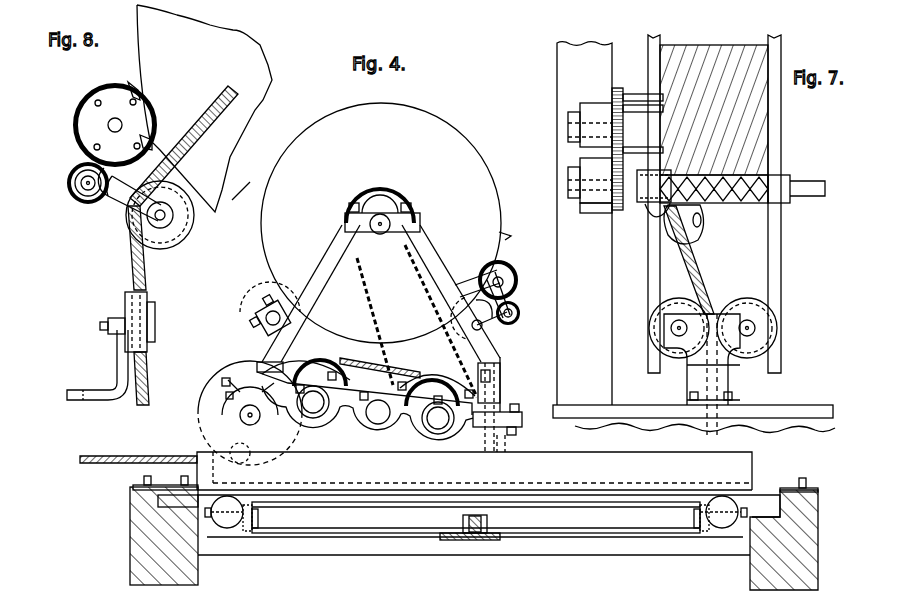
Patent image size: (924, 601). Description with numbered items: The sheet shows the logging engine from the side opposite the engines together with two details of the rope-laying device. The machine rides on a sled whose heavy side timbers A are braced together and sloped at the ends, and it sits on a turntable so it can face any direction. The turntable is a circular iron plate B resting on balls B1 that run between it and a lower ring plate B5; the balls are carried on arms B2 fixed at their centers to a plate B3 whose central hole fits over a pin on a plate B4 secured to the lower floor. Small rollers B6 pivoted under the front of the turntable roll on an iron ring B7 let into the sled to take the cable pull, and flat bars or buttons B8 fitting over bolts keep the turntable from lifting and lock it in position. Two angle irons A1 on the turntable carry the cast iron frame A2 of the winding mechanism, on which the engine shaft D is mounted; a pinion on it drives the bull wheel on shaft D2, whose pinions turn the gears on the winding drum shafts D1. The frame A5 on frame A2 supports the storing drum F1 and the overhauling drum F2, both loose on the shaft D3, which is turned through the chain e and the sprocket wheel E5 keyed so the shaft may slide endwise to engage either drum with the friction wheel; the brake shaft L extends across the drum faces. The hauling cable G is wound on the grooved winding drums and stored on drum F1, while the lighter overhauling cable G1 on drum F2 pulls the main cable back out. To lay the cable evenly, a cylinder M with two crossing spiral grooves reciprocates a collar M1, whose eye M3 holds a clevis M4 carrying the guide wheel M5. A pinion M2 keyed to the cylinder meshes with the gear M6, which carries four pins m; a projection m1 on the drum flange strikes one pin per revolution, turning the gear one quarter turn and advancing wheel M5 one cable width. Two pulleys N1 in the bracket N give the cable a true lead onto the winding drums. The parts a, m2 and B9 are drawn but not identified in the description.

In FIG. 4, the storing drum F1 is at (381, 223).
In FIG. 8, the overhauling drum F2 is at (204, 108).
In FIG. 7, the overhauling drum F2 is at (648, 266).
In FIG. 4, the sprocket wheel E5 is at (396, 202).
In FIG. 4, the shaft D3 is at (381, 226).
In FIG. 4, the frame A5 is at (437, 291).
In FIG. 4, the chain e is at (367, 292).
In FIG. 8, the cylinder M is at (72, 168).
In FIG. 7, the cylinder M is at (780, 200).
In FIG. 8, the collar M1 is at (75, 182).
In FIG. 7, the collar M1 is at (654, 186).
In FIG. 8, the pinion M2 is at (78, 192).
In FIG. 4, the pinion M2 is at (518, 314).
In FIG. 7, the pinion M2 is at (610, 213).
In FIG. 8, the eye M3 is at (110, 200).
In FIG. 8, the clevis M4 is at (128, 206).
In FIG. 7, the clevis M4 is at (648, 212).
In FIG. 8, the wheel M5 is at (192, 228).
In FIG. 4, the wheel M5 is at (471, 322).
In FIG. 7, the wheel M5 is at (700, 242).
In FIG. 8, the gear M6 is at (76, 112).
In FIG. 4, the gear M6 is at (515, 278).
In FIG. 7, the gear M6 is at (612, 90).
In FIG. 8, the pins m is at (130, 102).
In FIG. 7, the pins m is at (640, 114).
In FIG. 8, the projection m1 is at (138, 92).
In FIG. 4, the projection m1 is at (513, 240).
In FIG. 7, the projection m1 is at (643, 97).
In FIG. 8, the pawl m2 is at (152, 143).
In FIG. 8, the main or hauling cable G is at (134, 264).
In FIG. 4, the main or hauling cable G is at (507, 345).
In FIG. 7, the main or hauling cable G is at (684, 280).
In FIG. 4, the overhauling cable G1 is at (245, 189).
In FIG. 4, the brake shaft L is at (270, 309).
In FIG. 8, the supporting bracket N is at (148, 342).
In FIG. 4, the supporting bracket N is at (498, 370).
In FIG. 7, the supporting bracket N is at (690, 380).
In FIG. 7, the pulleys N1 is at (656, 330).
In FIG. 4, the cam disk a is at (250, 413).
In FIG. 4, the engine shaft D is at (250, 402).
In FIG. 4, the winding drum shafts D1 is at (375, 410).
In FIG. 4, the shaft D2 is at (384, 422).
In FIG. 4, the heavy timber A is at (130, 552).
In FIG. 4, the angle irons A1 is at (416, 503).
In FIG. 4, the cast iron frame A2 is at (389, 407).
In FIG. 7, the cast iron frame A2 is at (788, 412).
In FIG. 4, the circular iron plate B is at (582, 498).
In FIG. 4, the balls B1 is at (718, 528).
In FIG. 4, the arms B2 is at (476, 517).
In FIG. 4, the plate B3 is at (462, 521).
In FIG. 4, the plate B4 is at (476, 541).
In FIG. 4, the lower plate B5 is at (232, 542).
In FIG. 4, the rollers B6 is at (160, 501).
In FIG. 4, the iron ring B7 is at (160, 503).
In FIG. 4, the bars or buttons B8 is at (133, 488).
In FIG. 4, the shaft B9 is at (260, 522).